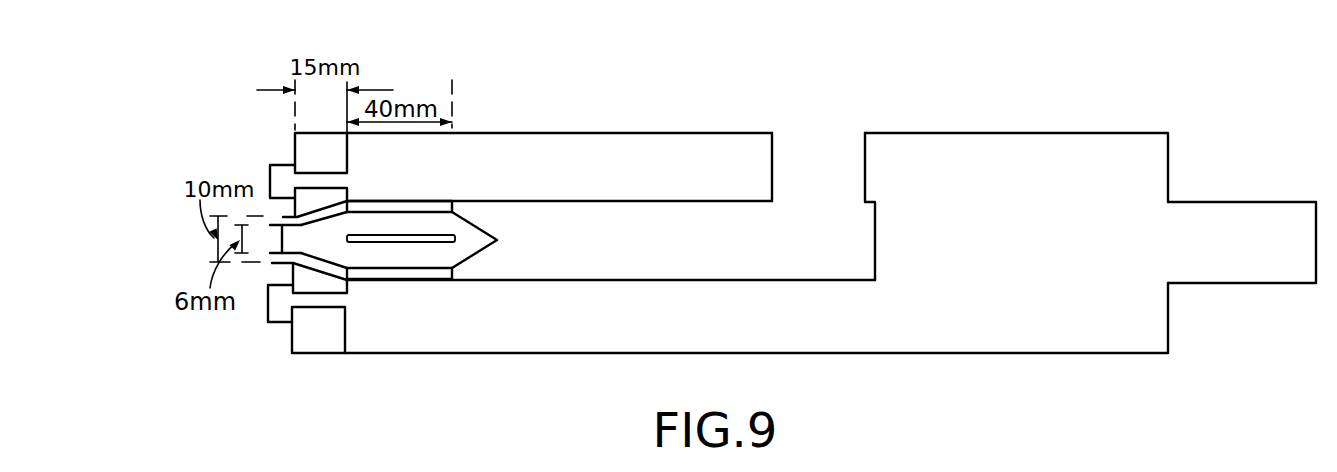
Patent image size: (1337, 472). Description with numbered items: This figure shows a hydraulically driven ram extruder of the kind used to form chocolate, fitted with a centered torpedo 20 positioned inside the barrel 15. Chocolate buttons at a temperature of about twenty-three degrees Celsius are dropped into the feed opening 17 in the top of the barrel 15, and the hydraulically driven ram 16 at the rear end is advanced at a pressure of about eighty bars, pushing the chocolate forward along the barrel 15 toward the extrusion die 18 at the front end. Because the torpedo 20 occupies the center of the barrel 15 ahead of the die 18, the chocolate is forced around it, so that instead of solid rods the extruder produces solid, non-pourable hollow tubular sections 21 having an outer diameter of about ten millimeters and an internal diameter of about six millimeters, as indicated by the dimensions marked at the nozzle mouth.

The barrel 15 is at (712, 353).
The hydraulically driven ram 16 is at (1218, 283).
The feed opening 17 is at (826, 145).
The extrusion die 18 is at (325, 353).
The torpedo 20 is at (477, 252).
The hollow tubular sections 21 is at (260, 262).